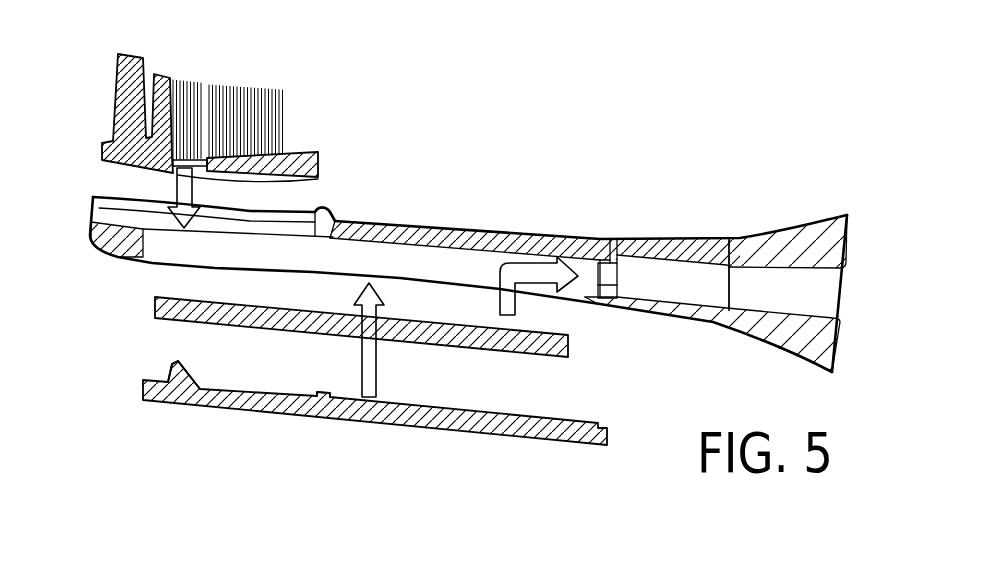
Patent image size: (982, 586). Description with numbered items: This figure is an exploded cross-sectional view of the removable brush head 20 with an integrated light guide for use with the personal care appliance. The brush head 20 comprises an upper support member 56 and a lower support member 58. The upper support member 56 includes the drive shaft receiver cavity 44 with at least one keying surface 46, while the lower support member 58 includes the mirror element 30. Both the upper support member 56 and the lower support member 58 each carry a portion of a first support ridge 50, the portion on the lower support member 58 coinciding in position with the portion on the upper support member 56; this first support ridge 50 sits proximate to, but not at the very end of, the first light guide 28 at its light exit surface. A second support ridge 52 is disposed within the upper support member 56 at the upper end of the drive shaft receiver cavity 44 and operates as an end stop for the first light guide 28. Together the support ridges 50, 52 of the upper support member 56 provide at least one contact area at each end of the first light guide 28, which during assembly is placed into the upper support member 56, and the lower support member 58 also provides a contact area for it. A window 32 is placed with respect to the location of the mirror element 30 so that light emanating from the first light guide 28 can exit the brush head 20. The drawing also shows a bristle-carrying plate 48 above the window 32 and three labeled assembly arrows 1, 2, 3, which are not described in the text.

The removable brush head 20 is at (550, 128).
The first light guide 28 is at (443, 337).
The mirror element 30 is at (195, 384).
The window 32 is at (195, 160).
The drive shaft receiver cavity 44 is at (797, 283).
The keying surface 46 is at (730, 265).
The brush head plate 48 is at (300, 163).
The first support ridge 50 is at (334, 223).
The second support ridge 52 is at (612, 262).
The upper support member 56 is at (500, 240).
The lower support member 58 is at (463, 425).
The movement direction 1 is at (539, 286).
The movement direction 2 is at (369, 340).
The movement direction 3 is at (184, 198).